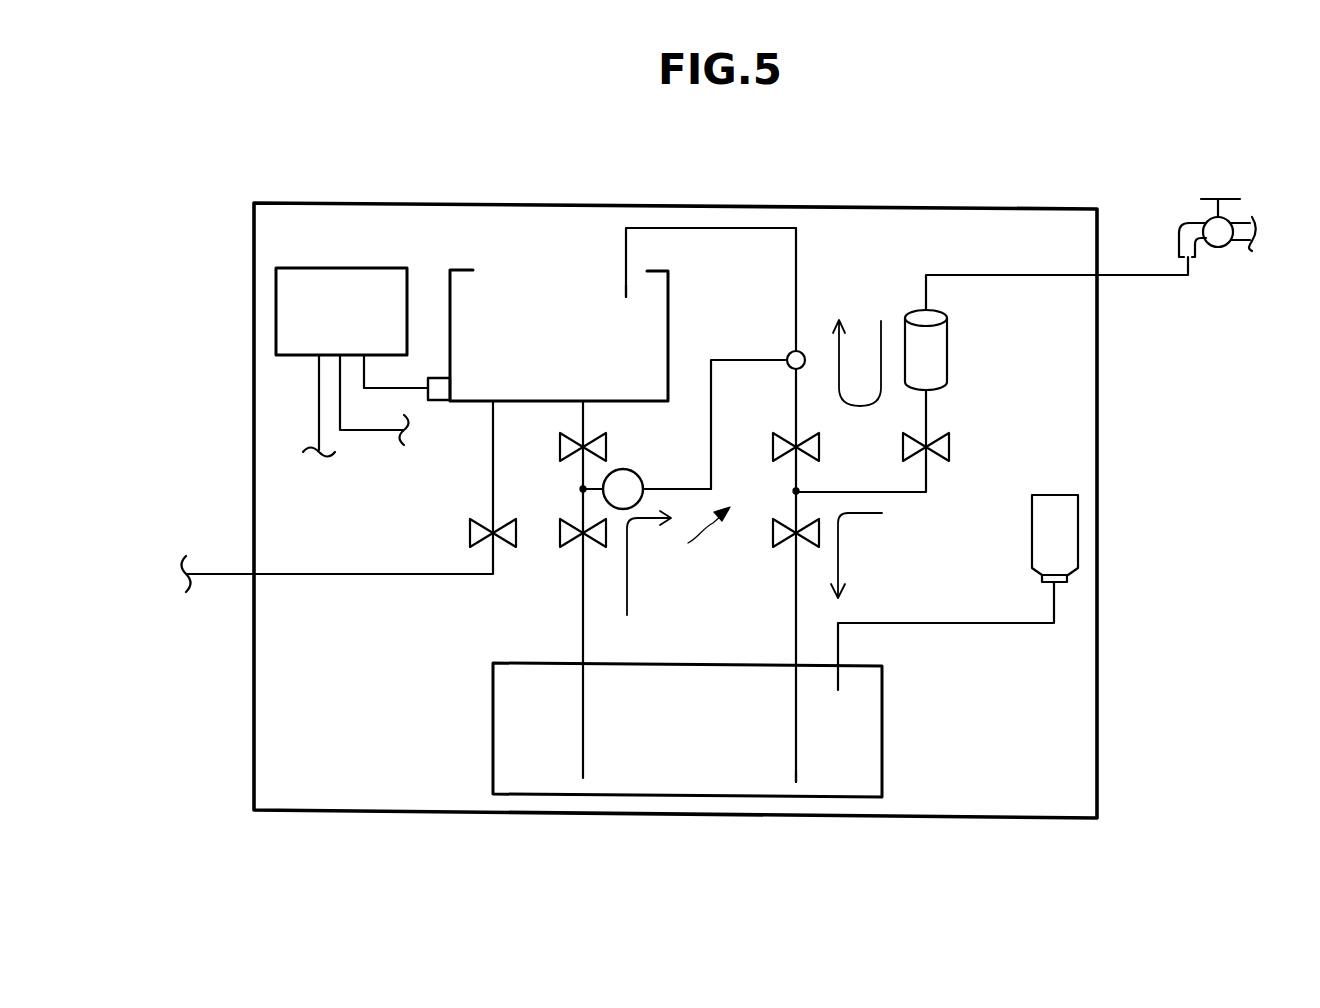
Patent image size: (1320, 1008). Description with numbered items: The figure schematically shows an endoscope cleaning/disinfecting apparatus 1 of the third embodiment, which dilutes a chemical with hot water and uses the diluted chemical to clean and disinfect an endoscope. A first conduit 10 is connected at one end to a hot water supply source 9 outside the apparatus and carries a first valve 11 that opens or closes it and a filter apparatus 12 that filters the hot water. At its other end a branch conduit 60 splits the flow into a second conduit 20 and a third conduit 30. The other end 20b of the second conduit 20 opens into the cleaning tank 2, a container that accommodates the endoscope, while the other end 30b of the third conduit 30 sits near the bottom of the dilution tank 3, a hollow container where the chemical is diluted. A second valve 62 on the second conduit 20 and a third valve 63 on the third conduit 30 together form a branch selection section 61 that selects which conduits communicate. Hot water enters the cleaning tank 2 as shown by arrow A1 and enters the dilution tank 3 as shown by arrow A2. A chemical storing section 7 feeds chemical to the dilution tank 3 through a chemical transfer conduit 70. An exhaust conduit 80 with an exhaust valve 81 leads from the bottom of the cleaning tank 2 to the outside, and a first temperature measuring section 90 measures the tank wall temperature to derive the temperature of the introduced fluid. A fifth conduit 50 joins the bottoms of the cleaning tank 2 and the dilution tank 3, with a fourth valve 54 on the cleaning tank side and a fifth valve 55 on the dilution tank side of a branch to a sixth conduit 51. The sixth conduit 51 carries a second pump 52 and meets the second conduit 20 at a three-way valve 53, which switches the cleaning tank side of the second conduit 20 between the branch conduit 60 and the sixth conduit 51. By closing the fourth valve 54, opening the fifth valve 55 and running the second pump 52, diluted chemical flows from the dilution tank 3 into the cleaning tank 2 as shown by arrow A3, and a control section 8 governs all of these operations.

The endoscope cleaning/disinfecting apparatus 1 is at (303, 203).
The cleaning tank 2 is at (473, 270).
The dilution tank 3 is at (673, 798).
The chemical storing section 7 is at (1078, 535).
The control section 8 is at (276, 303).
The hot water supply source 9 is at (1197, 222).
The first conduit 10 is at (998, 275).
The first valve 11 is at (949, 447).
The filter apparatus 12 is at (948, 334).
The second conduit 20 is at (723, 228).
The other end of the second conduit 20b is at (627, 283).
The third conduit 30 is at (796, 620).
The other end of the third conduit 30b is at (796, 766).
The fifth conduit 50 is at (583, 622).
The sixth conduit 51 is at (724, 360).
The second pump 52 is at (637, 472).
The three-way valve 53 is at (789, 352).
The fourth valve 54 is at (557, 447).
The fifth valve 55 is at (559, 538).
The branch conduit 60 is at (802, 488).
The branch selection section 61 is at (692, 534).
The second valve 62 is at (771, 447).
The third valve 63 is at (771, 533).
The chemical transfer conduit 70 is at (1010, 623).
The exhaust conduit 80 is at (378, 574).
The exhaust valve 81 is at (470, 533).
The first temperature measuring section 90 is at (437, 378).
The arrow A1 is at (842, 357).
The arrow A2 is at (839, 556).
The arrow A3 is at (627, 565).